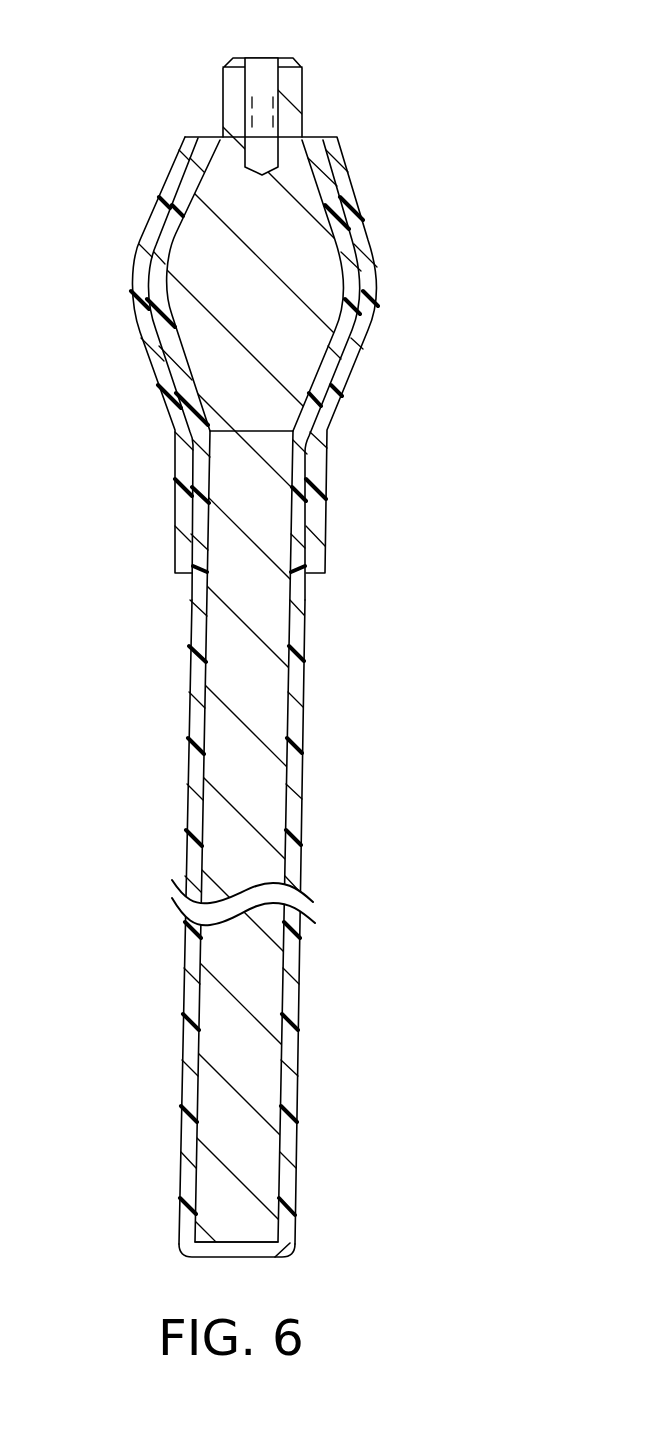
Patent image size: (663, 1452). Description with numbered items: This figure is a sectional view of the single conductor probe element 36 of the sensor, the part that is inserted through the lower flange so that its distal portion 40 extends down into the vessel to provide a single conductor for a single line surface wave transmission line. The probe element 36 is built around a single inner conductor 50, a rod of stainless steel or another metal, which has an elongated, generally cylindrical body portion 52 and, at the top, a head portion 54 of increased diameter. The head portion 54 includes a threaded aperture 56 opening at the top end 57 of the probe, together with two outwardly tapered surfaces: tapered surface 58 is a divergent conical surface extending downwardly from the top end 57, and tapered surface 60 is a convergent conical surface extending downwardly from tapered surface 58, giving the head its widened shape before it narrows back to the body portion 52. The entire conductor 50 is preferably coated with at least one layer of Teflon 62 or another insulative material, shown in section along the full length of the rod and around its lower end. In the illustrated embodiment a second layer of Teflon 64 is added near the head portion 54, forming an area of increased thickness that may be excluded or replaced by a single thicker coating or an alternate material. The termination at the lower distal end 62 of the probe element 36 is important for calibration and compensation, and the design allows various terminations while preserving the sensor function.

The probe element 36 is at (292, 693).
The distal portion 40 is at (333, 1208).
The inner conductor 50 is at (220, 830).
The body portion 52 is at (253, 785).
The head portion 54 is at (287, 223).
The threaded aperture 56 is at (277, 80).
The top end 57 is at (200, 62).
The tapered surface 58 is at (330, 217).
The tapered surface 60 is at (330, 337).
The layer of Teflon 62 is at (167, 1160).
The second layer of Teflon 64 is at (118, 256).